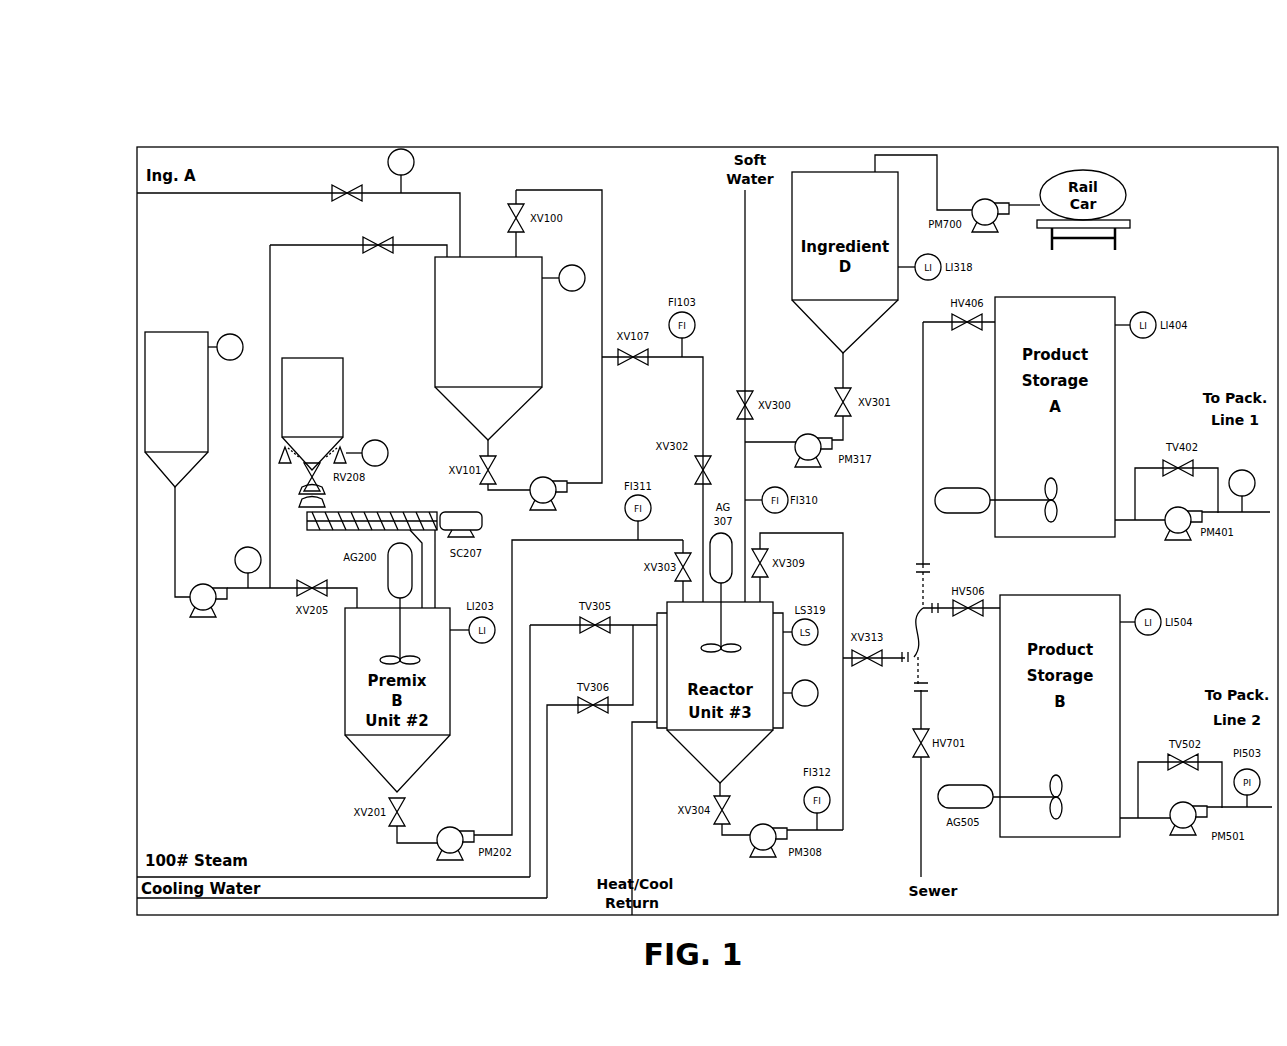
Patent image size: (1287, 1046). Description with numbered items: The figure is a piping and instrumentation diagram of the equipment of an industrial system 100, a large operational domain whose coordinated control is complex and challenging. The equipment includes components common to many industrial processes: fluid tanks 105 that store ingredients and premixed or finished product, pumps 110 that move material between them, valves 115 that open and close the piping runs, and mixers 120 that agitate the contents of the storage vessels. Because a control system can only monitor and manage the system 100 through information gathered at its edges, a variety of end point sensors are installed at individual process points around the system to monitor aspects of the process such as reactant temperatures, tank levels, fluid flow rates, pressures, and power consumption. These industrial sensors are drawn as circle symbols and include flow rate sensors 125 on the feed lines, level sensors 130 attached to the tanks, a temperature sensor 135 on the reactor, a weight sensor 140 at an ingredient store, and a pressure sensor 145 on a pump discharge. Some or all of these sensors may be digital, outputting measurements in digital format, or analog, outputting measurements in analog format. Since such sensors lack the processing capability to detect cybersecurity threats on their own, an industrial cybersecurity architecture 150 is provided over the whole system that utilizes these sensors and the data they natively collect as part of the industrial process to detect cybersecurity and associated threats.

The industrial system 100 is at (173, 110).
The industrial cybersecurity architecture 150 is at (693, 140).
The fluid tanks 105 is at (190, 331).
The pumps 110 is at (218, 603).
The valves 115 is at (347, 203).
The mixers 120 is at (962, 487).
The flow rate sensors 125 is at (390, 156).
The level sensors 130 is at (231, 360).
The temperature sensors 135 is at (805, 706).
The weight sensors 140 is at (388, 453).
The pressure sensors 145 is at (1228, 484).